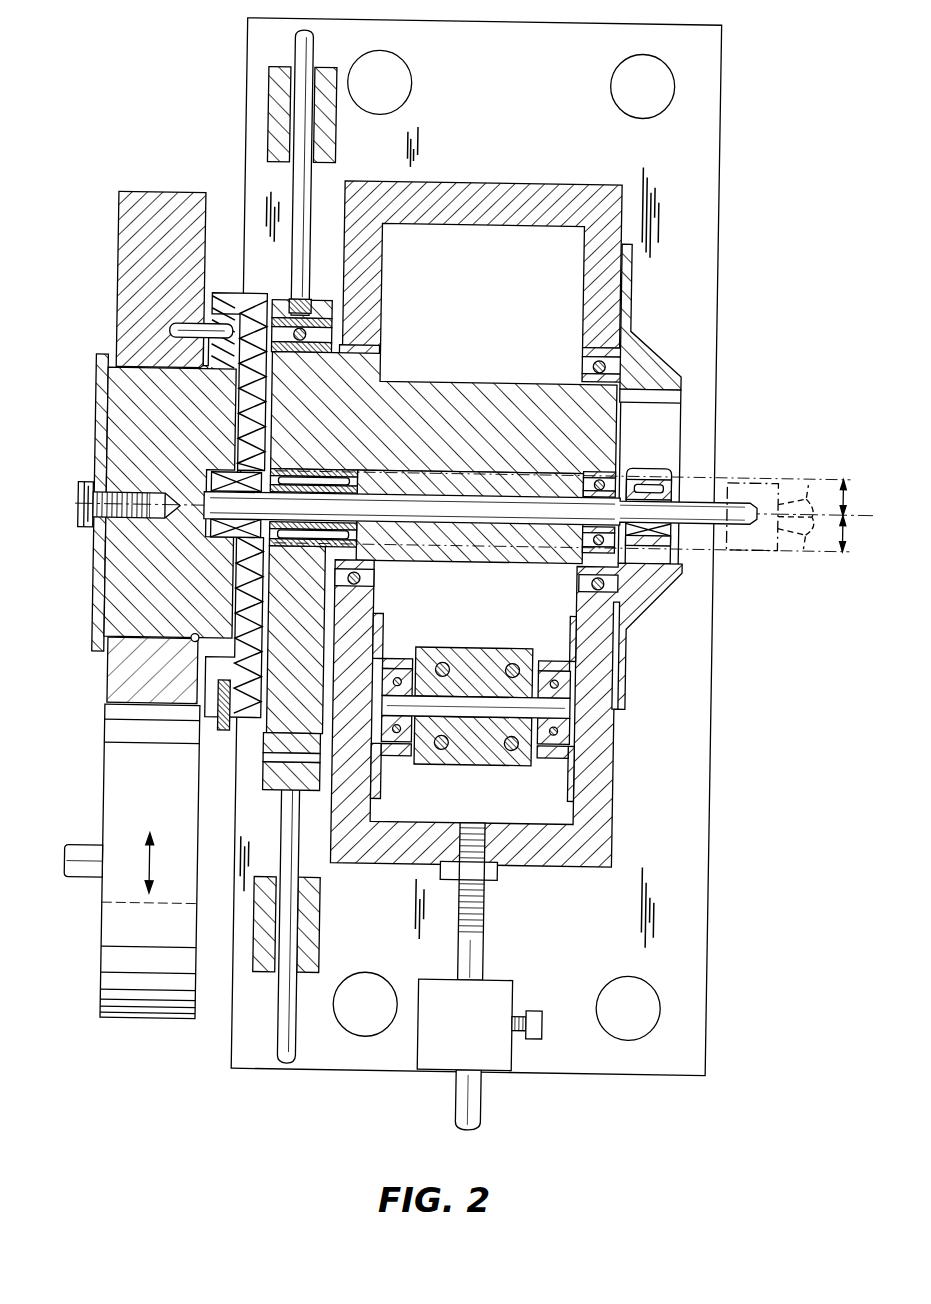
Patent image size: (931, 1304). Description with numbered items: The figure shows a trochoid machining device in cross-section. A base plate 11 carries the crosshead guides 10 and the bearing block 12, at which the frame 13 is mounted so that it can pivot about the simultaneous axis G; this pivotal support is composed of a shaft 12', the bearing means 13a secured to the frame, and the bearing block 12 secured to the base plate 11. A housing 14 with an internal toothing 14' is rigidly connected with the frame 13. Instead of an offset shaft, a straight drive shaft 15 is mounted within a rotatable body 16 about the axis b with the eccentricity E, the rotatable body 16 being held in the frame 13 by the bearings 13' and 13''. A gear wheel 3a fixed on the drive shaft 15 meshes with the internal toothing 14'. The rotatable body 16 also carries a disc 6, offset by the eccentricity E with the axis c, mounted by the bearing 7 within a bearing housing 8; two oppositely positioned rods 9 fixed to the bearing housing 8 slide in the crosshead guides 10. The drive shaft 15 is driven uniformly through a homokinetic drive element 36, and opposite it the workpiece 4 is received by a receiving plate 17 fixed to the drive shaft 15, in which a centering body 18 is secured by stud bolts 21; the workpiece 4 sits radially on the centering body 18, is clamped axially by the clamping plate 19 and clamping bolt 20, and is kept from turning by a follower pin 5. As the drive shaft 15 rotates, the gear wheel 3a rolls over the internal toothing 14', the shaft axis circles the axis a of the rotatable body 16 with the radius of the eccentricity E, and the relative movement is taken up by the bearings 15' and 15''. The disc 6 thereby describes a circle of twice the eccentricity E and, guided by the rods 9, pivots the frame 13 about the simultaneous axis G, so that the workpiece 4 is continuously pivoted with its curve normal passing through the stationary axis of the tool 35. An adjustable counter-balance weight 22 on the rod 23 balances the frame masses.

The gear wheel 3a is at (640, 455).
The workpiece 4 is at (118, 210).
The follower pin 5 is at (206, 326).
The disc 6 is at (270, 738).
The bearing 7 is at (268, 780).
The bearing housing 8 is at (290, 798).
The rods 9 is at (308, 192).
The crosshead guides 10 is at (450, 546).
The base plate 11 is at (497, 127).
The bearing block 12 is at (476, 691).
The shaft 12' is at (486, 657).
The frame 13 is at (483, 256).
The bearing 13' is at (377, 350).
The bearing 13'' is at (635, 348).
The bearing means 13a is at (550, 757).
The housing 14 is at (661, 404).
The internal toothing 14' is at (667, 408).
The drive shaft 15 is at (488, 530).
The bearing 15' is at (383, 414).
The bearing 15'' is at (625, 483).
The rotatable body 16 is at (478, 392).
The receiving plate 17 is at (240, 297).
The centering body 18 is at (115, 460).
The clamping plate 19 is at (95, 402).
The clamping bolt 20 is at (85, 535).
The stud bolts 21 is at (229, 734).
The counter-balance weight 22 is at (520, 990).
The rod 23 is at (510, 960).
The tool 35 is at (165, 940).
The homokinetic drive element 36 is at (770, 560).
The eccentricity E is at (562, 511).
The simultaneous axis G is at (520, 698).
The axis of the rotatable body a is at (800, 478).
The axis of the drive shaft b is at (800, 535).
The axis of the disc c is at (818, 548).